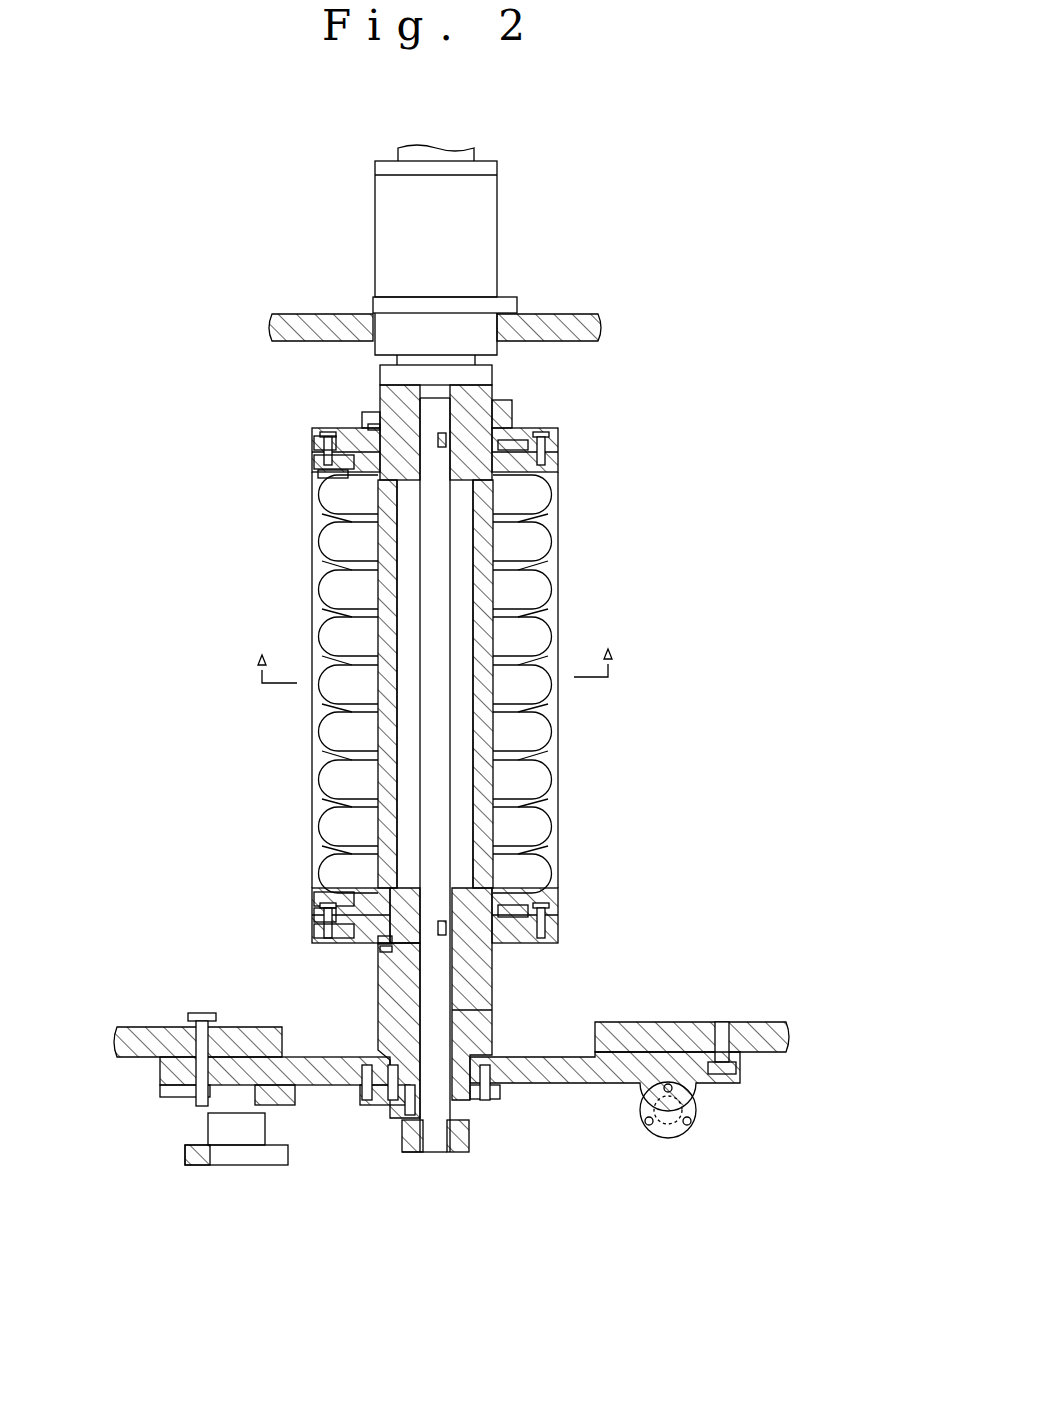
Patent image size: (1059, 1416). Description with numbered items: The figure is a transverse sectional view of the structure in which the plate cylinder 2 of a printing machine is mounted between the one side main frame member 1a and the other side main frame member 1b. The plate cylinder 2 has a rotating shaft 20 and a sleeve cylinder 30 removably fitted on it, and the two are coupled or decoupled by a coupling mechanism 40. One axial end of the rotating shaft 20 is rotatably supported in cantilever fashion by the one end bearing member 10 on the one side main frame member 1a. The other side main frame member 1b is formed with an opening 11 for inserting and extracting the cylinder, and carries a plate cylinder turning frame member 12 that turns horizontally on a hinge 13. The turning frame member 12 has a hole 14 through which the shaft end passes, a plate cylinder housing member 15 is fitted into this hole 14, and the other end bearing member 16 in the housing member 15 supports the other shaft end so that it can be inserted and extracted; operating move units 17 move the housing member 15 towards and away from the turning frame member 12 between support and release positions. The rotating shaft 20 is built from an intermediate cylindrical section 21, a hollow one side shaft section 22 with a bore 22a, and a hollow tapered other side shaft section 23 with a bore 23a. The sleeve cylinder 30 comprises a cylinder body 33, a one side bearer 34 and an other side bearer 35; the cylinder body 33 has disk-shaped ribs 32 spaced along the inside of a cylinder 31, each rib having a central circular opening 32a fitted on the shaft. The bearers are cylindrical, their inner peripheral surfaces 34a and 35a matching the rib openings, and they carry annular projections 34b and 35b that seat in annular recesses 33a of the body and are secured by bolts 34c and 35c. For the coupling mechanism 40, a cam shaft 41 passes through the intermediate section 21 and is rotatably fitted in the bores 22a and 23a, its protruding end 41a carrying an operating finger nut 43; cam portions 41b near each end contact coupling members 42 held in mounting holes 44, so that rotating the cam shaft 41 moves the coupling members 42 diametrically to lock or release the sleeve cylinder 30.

The plate cylinder 2 is at (566, 584).
The one end bearing member 10 is at (487, 226).
The one side main frame member 1a is at (520, 314).
The other side main frame member 1b is at (770, 1022).
The opening 11 is at (578, 1055).
The plate cylinder turning frame member 12 is at (165, 1087).
The hinge 13 is at (668, 1140).
The hole 14 is at (300, 1057).
The plate cylinder housing member 15 is at (560, 1085).
The other end bearing member 16 is at (390, 1105).
The operating move unit 17 is at (248, 1166).
The rotating shaft 20 is at (510, 522).
The intermediate cylindrical section 21 is at (487, 735).
The one side shaft section 22 is at (470, 440).
The bore 22a is at (455, 402).
The other side shaft section 23 is at (492, 962).
The bore 23a is at (456, 1012).
The sleeve cylinder 30 is at (310, 576).
The cylinder 31 is at (355, 759).
The ribs 32 is at (380, 812).
The circular opening 32a is at (370, 824).
The cylinder body 33 is at (215, 748).
The annular recess 33a is at (338, 478).
The one side bearer 34 is at (540, 436).
The inner peripheral surface 34a is at (515, 458).
The annular projection 34b is at (355, 432).
The bolt 34c is at (328, 458).
The other side bearer 35 is at (560, 905).
The inner peripheral surface 35a is at (505, 912).
The annular projection 35b is at (339, 910).
The bolt 35c is at (330, 924).
The coupling mechanism 40 is at (462, 1152).
The cam shaft 41 is at (437, 782).
The protruding end 41a is at (437, 1156).
The cam portion 41b is at (500, 482).
The coupling member 42 is at (334, 496).
The operating finger nut 43 is at (405, 1152).
The mounting hole 44 is at (369, 428).